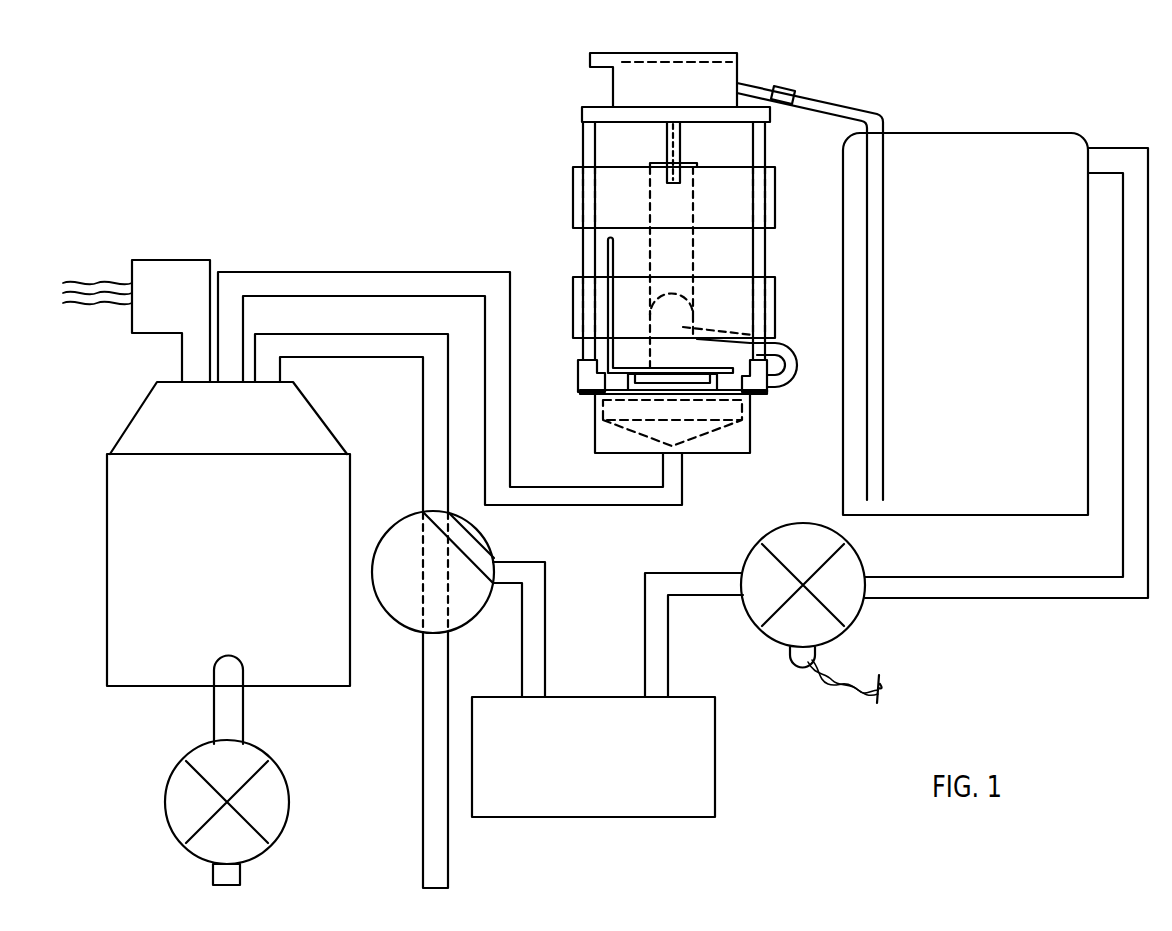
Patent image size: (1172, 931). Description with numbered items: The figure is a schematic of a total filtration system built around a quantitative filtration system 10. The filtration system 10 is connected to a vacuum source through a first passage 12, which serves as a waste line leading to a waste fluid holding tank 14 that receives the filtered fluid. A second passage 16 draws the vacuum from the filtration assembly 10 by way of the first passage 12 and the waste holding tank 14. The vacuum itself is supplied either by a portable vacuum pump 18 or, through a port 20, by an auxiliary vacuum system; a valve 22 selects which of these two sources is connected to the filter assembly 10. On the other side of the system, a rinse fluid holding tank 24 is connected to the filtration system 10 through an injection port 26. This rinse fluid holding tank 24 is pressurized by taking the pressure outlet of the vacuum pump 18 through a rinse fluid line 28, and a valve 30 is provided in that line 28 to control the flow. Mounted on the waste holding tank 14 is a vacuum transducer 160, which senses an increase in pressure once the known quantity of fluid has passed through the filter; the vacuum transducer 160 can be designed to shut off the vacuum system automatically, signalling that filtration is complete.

The quantitative filtration system 10 is at (528, 122).
The first passage 12 is at (353, 273).
The waste fluid holding tank 14 is at (126, 565).
The second passage 16 is at (358, 350).
The portable vacuum pump 18 is at (700, 757).
The port 20 is at (430, 790).
The valve 22 is at (490, 538).
The rinse fluid holding tank 24 is at (986, 330).
The injection port 26 is at (786, 92).
The rinse fluid line 28 is at (1010, 597).
The valve 30 is at (855, 618).
The vacuum transducer 160 is at (182, 280).